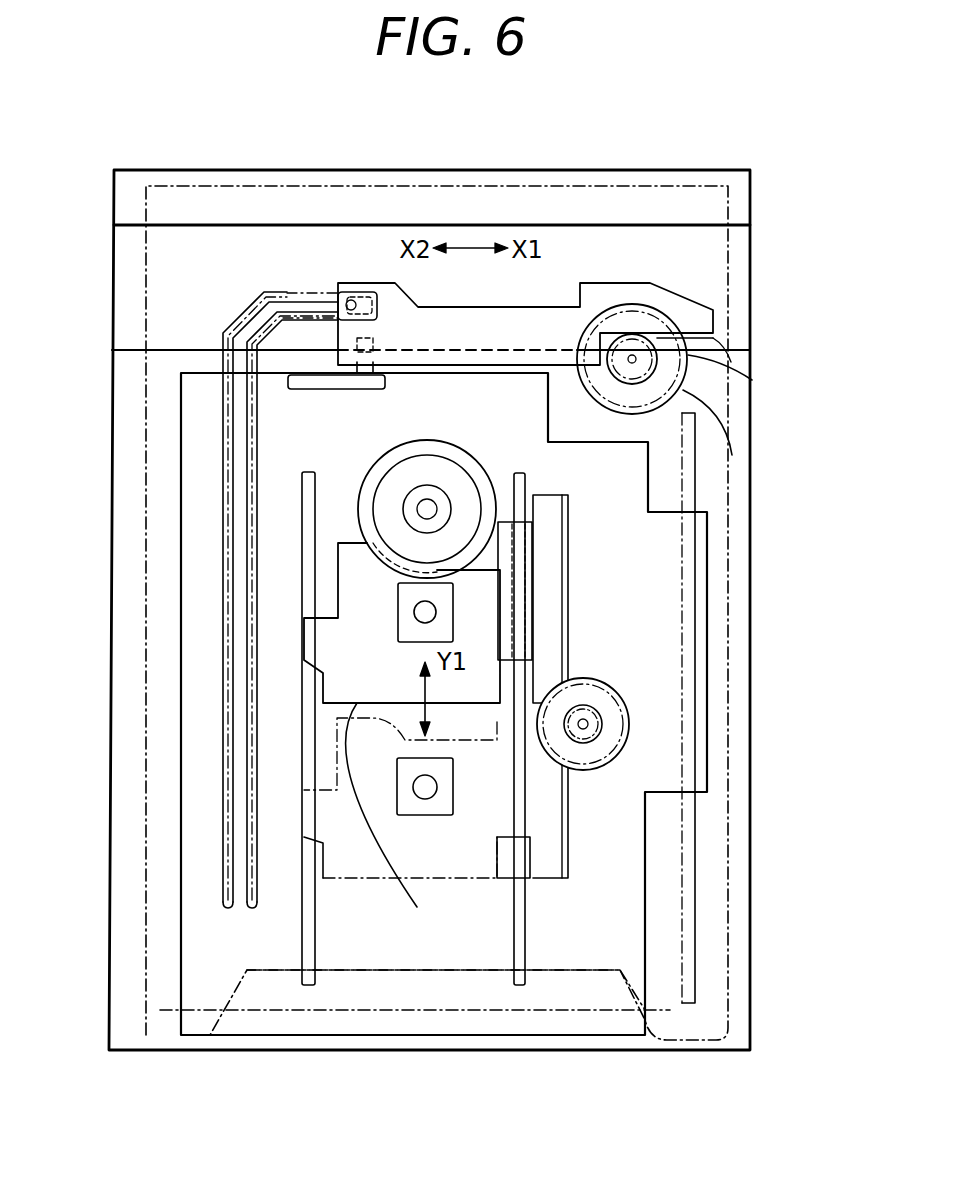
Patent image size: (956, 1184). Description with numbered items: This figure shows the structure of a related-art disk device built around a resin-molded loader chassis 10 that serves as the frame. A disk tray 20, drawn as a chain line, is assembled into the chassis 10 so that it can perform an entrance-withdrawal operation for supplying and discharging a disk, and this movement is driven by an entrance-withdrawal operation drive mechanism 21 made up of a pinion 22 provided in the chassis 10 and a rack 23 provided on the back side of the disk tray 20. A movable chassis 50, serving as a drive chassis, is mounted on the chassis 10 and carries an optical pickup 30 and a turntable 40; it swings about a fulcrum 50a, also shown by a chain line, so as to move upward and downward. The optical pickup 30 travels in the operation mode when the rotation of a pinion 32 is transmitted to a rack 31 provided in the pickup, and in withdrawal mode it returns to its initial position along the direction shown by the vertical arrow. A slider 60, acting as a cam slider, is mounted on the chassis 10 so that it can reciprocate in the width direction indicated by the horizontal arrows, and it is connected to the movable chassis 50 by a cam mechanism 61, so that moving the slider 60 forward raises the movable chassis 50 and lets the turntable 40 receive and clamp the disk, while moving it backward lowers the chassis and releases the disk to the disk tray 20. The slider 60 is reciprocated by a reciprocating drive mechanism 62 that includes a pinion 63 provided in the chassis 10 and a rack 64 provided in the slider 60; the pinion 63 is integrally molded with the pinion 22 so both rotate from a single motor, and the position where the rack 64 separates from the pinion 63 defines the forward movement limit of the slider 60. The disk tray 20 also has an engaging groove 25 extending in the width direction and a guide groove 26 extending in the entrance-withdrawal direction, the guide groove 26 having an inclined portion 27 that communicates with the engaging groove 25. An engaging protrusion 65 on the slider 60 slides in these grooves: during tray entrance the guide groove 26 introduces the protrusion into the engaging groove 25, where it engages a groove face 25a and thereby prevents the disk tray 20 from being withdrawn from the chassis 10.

The chassis 10 is at (750, 728).
The disk tray 20 is at (707, 593).
The entrance-withdrawal operation drive mechanism 21 is at (777, 670).
The pinion 22 is at (734, 458).
The rack 23 is at (693, 493).
The engaging groove 25 is at (327, 307).
The groove face 25a is at (290, 312).
The guide groove 26 is at (223, 720).
The inclined portion 27 is at (243, 320).
The optical pickup 30 is at (470, 882).
The rack 31 is at (572, 577).
The pinion 32 is at (628, 725).
The turntable 40 is at (455, 442).
The movable chassis 50 is at (181, 575).
The fulcrum 50a is at (397, 1010).
The slider 60 is at (557, 308).
The cam mechanism 61 is at (388, 336).
The reciprocating drive mechanism 62 is at (721, 363).
The pinion 63 is at (812, 345).
The rack 64 is at (752, 366).
The engaging protrusion 65 is at (352, 294).